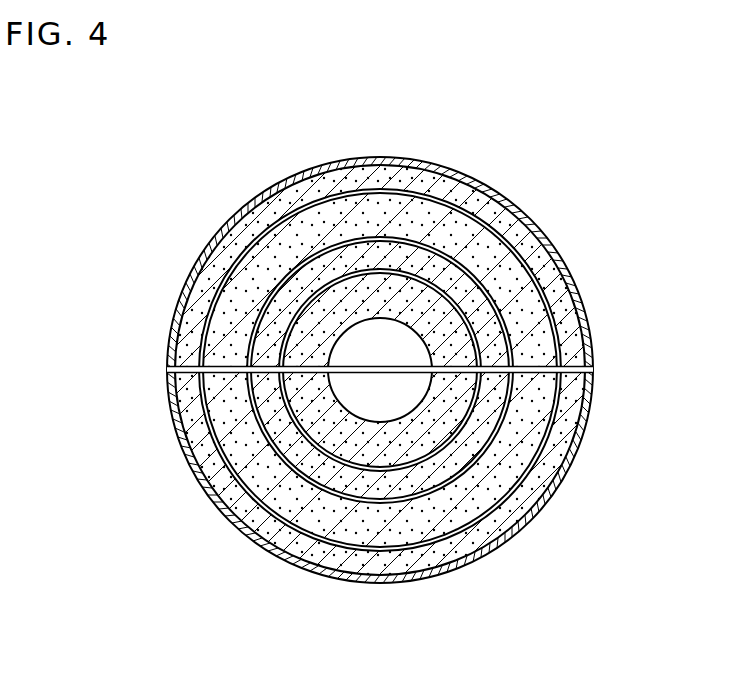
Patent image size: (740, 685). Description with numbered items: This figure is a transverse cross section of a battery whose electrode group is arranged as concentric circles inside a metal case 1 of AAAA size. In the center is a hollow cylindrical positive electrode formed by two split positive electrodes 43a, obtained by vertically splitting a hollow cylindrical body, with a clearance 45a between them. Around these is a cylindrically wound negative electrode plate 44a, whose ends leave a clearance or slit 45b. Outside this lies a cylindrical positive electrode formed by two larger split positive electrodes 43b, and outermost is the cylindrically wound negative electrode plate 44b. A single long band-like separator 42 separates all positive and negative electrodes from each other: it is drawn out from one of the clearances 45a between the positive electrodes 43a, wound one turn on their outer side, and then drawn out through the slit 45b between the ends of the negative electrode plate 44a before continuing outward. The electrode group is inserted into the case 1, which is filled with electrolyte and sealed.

The case 1 is at (532, 216).
The separator 42 is at (390, 367).
The split positive electrodes 43a is at (522, 312).
The split positive electrodes 43b is at (259, 267).
The negative electrode plate 44a is at (377, 272).
The negative electrode plate 44b is at (377, 563).
The clearance 45a is at (560, 468).
The clearance or slit 45b is at (583, 400).